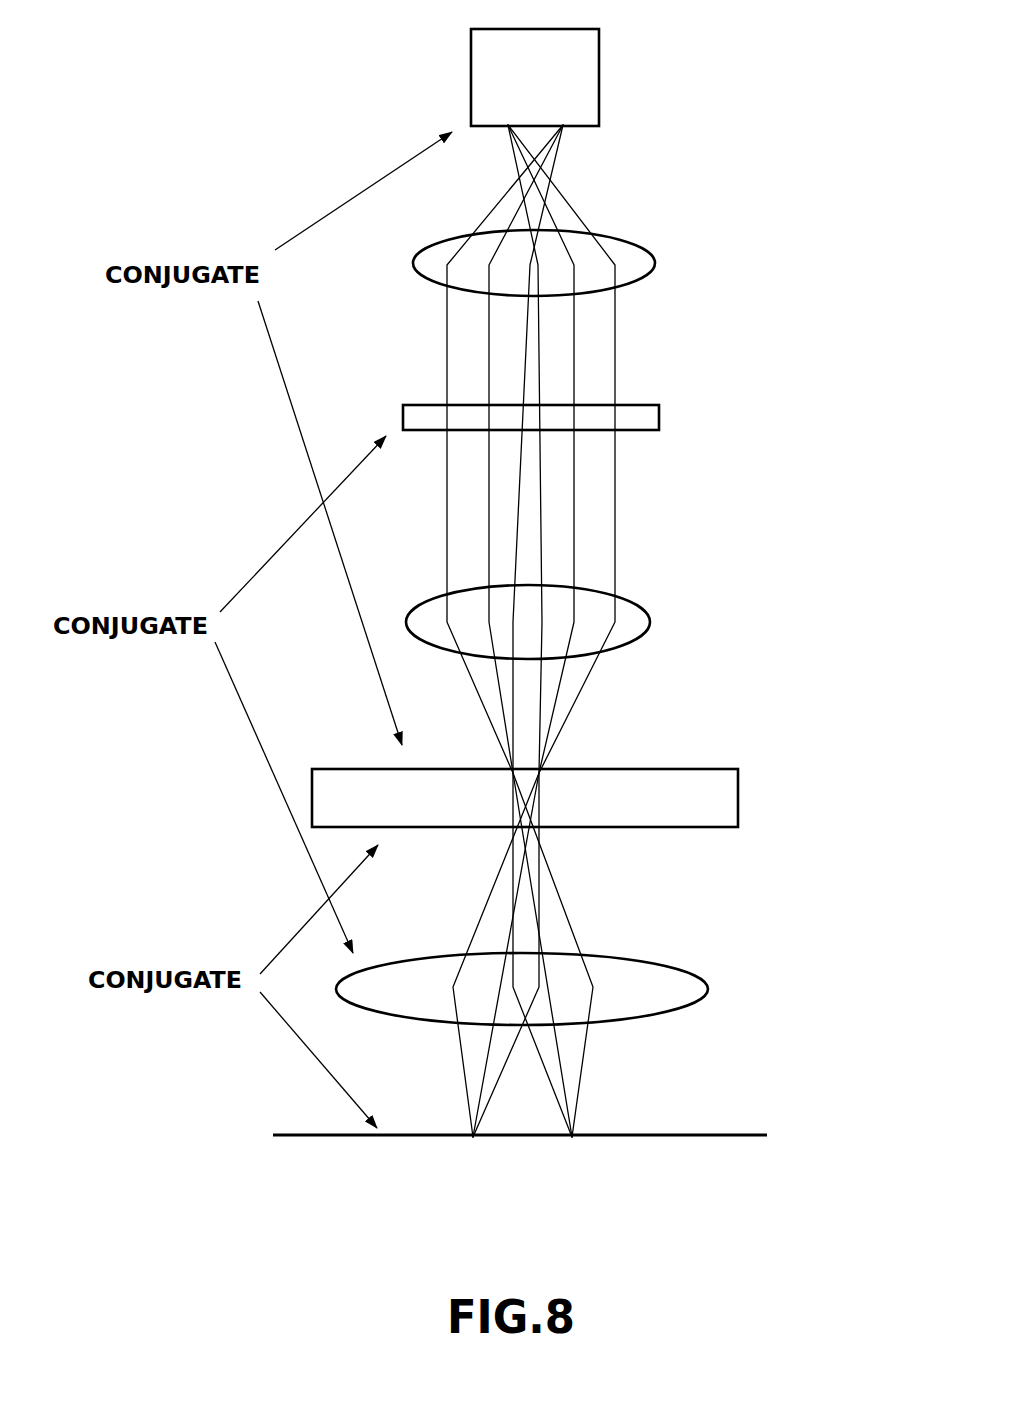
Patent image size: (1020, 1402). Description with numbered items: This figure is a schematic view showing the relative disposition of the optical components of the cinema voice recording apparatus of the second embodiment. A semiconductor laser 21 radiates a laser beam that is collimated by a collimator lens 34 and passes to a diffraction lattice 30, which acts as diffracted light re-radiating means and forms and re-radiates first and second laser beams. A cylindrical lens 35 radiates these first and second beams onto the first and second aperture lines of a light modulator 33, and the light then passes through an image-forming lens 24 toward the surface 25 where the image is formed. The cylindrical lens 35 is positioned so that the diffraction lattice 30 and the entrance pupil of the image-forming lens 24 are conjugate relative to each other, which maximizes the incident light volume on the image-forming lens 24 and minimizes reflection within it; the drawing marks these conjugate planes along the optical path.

The semiconductor laser 21 is at (590, 58).
The collimator lens 34 is at (628, 252).
The diffraction lattice 30 is at (652, 417).
The cylindrical lens 35 is at (633, 622).
The light modulator 33 is at (707, 786).
The image-forming lens 24 is at (667, 985).
The specimen surface 25 is at (727, 1137).